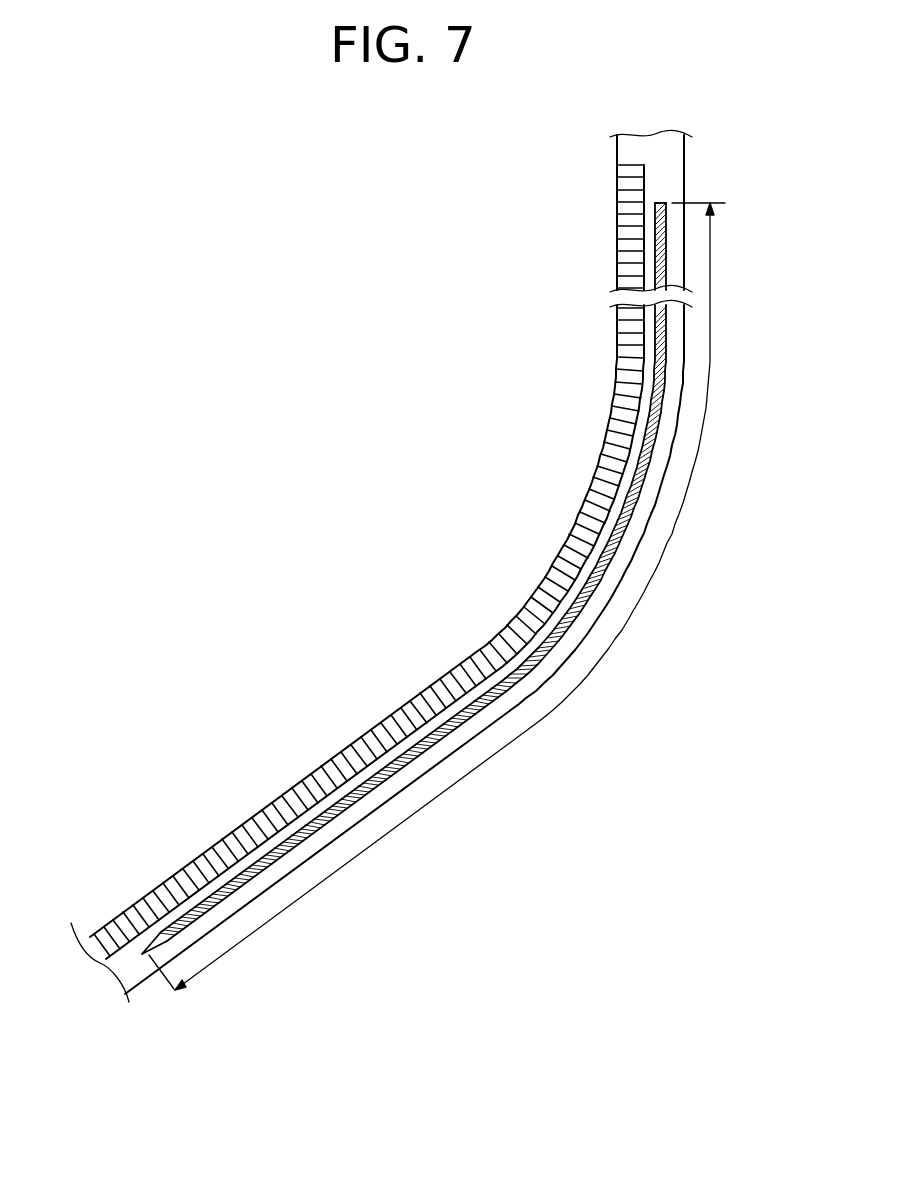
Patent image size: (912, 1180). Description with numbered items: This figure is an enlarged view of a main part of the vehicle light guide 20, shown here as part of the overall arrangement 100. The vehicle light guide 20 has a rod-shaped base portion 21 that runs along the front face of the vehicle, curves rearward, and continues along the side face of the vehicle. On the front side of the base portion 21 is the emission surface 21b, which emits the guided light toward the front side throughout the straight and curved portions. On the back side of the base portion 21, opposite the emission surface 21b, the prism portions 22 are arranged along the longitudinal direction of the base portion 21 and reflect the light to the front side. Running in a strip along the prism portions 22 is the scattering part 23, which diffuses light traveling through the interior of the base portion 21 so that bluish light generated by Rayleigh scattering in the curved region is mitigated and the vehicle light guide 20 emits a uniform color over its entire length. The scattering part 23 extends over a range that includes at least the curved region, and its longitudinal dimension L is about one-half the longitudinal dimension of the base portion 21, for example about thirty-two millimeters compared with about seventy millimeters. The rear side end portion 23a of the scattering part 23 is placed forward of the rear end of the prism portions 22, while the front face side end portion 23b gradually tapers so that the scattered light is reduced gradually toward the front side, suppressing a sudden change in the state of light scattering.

The endoscope insertion portion 100 is at (439, 163).
The vehicle light guide 20 is at (214, 830).
The base portion 21 is at (626, 150).
The emission surface 21b is at (687, 143).
The prism portions 22 is at (627, 223).
The scattering part 23 is at (655, 340).
The rear side end portion of the scattering part 23a is at (657, 204).
The front face side end portion of the scattering part 23b is at (118, 933).
The longitudinal dimension of the scattering part L is at (710, 370).